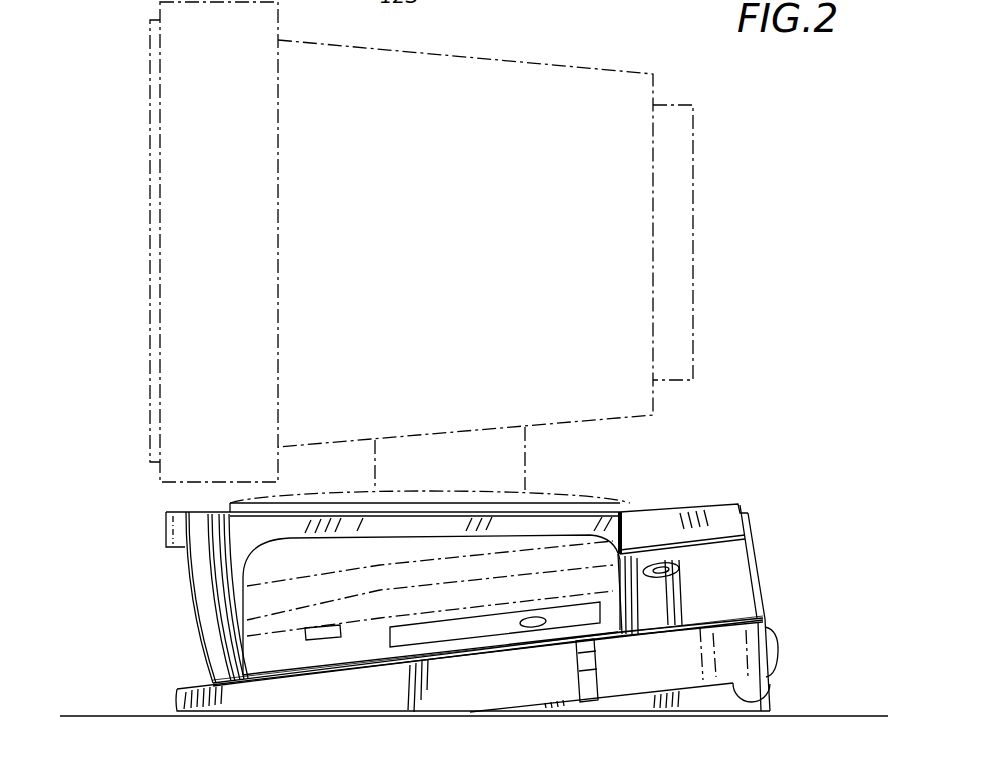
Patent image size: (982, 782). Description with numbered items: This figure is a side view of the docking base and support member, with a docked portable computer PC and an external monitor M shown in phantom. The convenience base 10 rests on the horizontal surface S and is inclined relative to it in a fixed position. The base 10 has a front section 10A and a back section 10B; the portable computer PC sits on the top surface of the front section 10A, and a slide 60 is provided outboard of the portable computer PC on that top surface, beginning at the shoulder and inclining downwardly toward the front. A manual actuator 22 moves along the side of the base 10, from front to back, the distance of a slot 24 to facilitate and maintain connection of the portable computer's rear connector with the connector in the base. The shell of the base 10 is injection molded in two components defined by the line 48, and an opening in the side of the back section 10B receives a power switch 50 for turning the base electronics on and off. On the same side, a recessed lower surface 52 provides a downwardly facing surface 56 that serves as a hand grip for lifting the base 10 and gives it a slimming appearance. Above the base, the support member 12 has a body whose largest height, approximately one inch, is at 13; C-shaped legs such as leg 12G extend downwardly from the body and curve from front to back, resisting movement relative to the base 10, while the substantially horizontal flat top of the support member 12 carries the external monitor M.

The external monitor M is at (631, 211).
The support member 12 is at (154, 521).
The leg 12G is at (212, 603).
The front section 10A is at (206, 689).
The slide 60 is at (373, 655).
The portable computer PC is at (530, 587).
The largest height of the support body 13 is at (622, 533).
The back section 10B is at (740, 562).
The power switch 50 is at (680, 573).
The line 48 is at (767, 620).
The convenience base 10 is at (800, 632).
The downwardly facing surface 56 is at (768, 691).
The slot 24 is at (530, 655).
The manual actuator 22 is at (600, 686).
The recessed lower surface 52 is at (704, 697).
The horizontal surface S is at (848, 710).